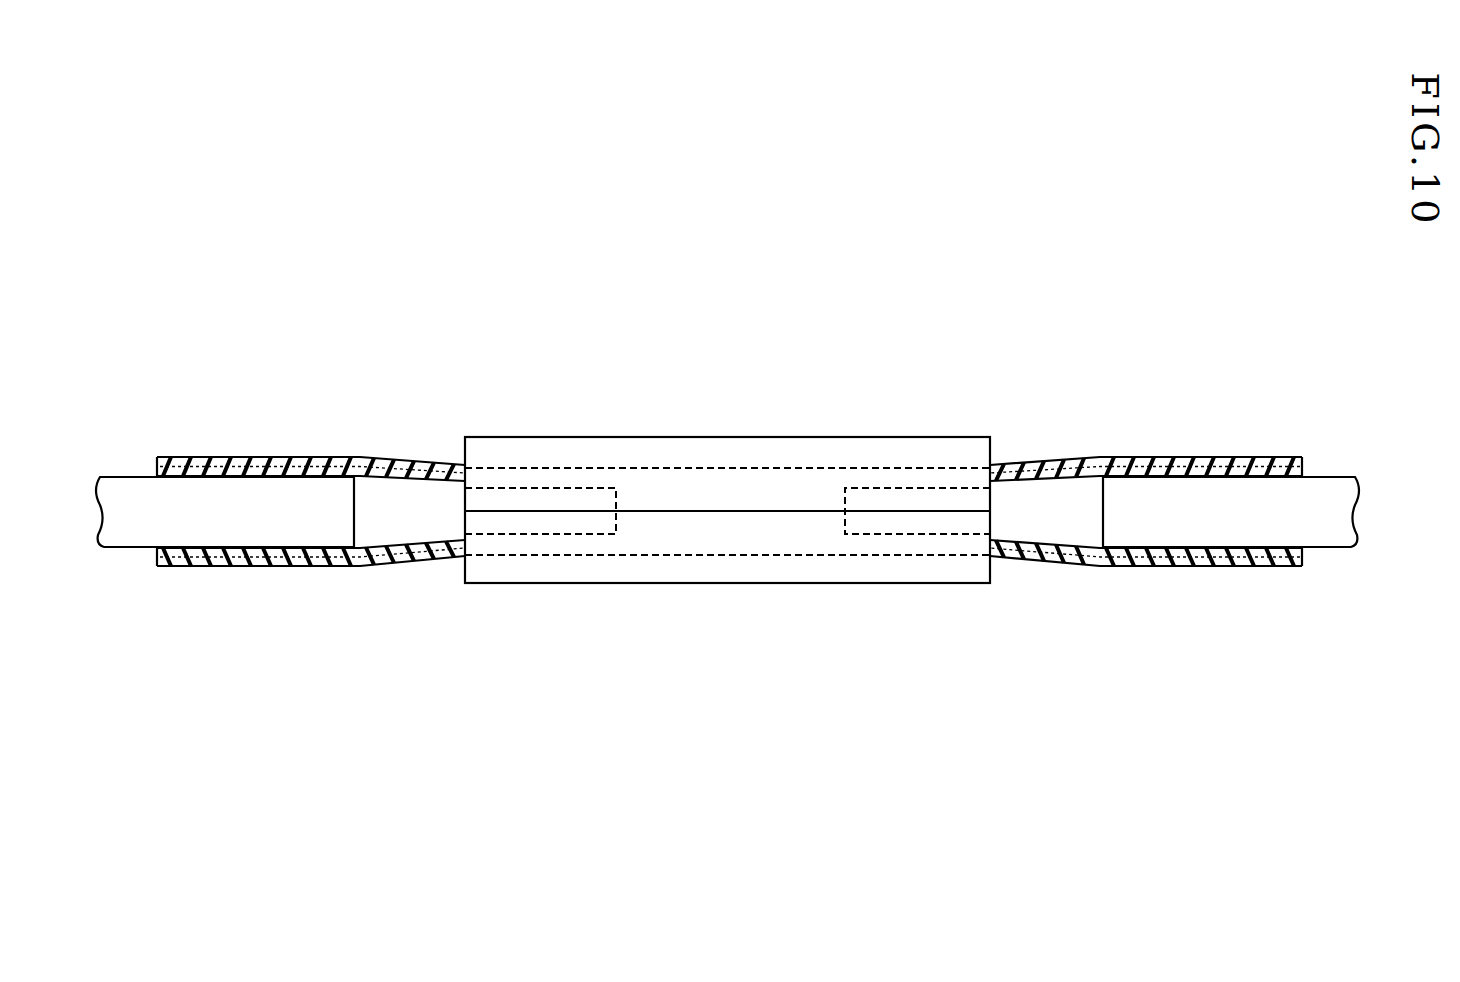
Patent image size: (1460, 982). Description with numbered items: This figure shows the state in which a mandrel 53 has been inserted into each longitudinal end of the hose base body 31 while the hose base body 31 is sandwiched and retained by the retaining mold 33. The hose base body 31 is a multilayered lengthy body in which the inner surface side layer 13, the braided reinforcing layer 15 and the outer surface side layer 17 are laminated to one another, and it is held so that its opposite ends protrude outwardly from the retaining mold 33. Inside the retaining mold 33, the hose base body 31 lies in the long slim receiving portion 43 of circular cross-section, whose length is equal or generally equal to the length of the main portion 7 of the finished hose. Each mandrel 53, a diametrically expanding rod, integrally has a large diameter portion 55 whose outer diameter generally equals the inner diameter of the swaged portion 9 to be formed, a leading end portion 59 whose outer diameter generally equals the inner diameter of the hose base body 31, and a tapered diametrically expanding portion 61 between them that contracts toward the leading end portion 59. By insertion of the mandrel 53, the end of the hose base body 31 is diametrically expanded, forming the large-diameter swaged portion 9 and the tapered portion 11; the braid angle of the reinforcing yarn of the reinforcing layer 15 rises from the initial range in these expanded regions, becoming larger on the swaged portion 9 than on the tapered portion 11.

The main portion 7 is at (783, 468).
The swaged portion 9 is at (205, 457).
The tapered portion 11 is at (412, 470).
The inner surface side layer 13 is at (190, 553).
The reinforcing layer 15 is at (247, 558).
The outer surface side layer 17 is at (302, 563).
The hose base body 31 is at (322, 457).
The retaining mold 33 is at (661, 437).
The receiving portion 43 is at (740, 553).
The mandrel 53 is at (129, 548).
The large diameter portion 55 is at (138, 495).
The leading end portion 59 is at (540, 492).
The diametrically expanding portion 61 is at (384, 492).